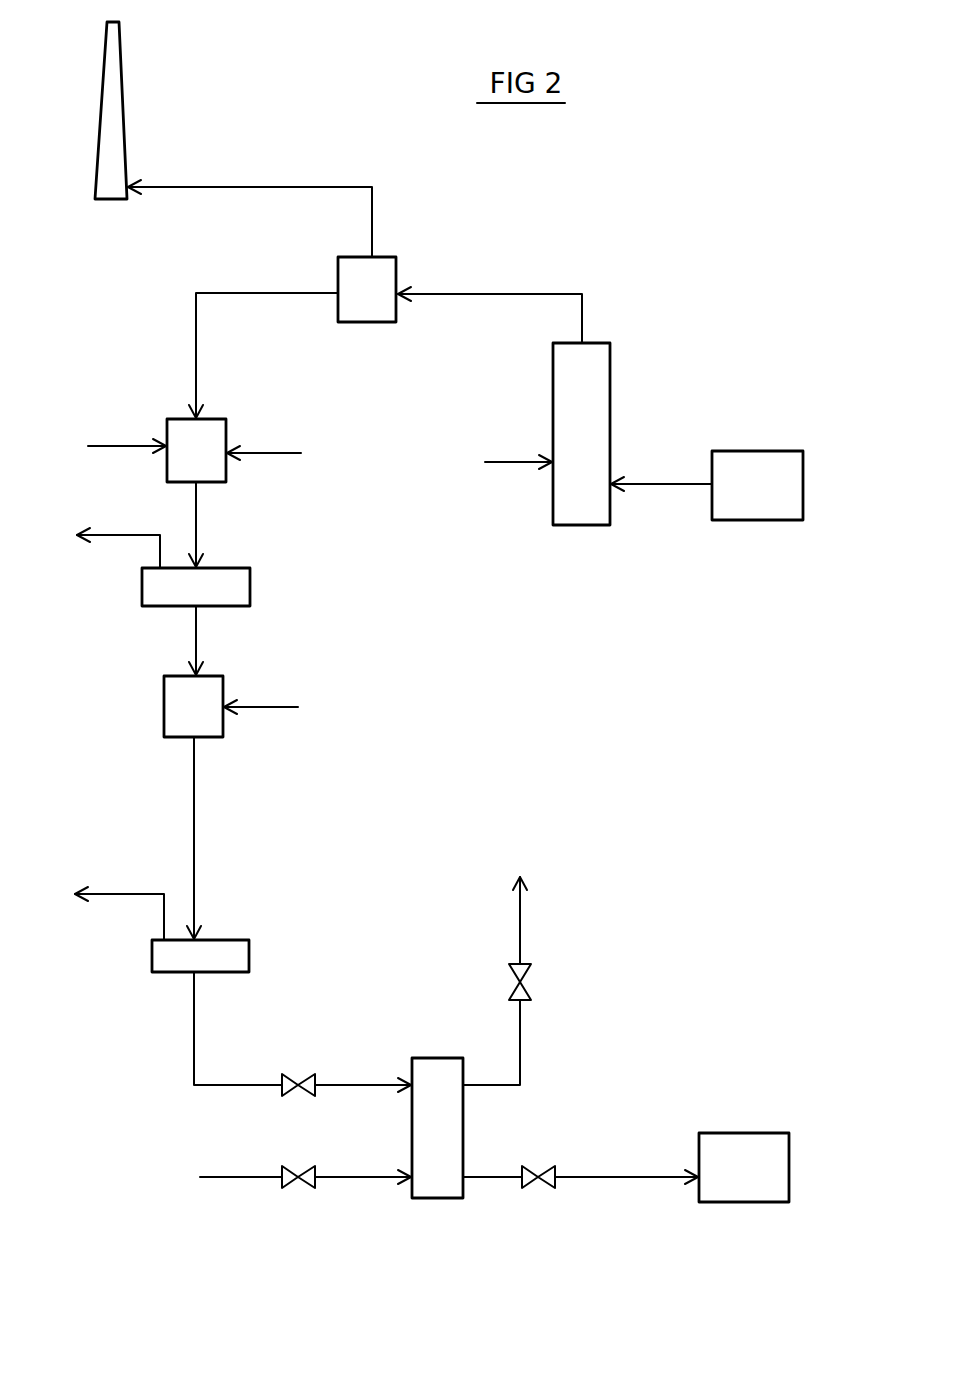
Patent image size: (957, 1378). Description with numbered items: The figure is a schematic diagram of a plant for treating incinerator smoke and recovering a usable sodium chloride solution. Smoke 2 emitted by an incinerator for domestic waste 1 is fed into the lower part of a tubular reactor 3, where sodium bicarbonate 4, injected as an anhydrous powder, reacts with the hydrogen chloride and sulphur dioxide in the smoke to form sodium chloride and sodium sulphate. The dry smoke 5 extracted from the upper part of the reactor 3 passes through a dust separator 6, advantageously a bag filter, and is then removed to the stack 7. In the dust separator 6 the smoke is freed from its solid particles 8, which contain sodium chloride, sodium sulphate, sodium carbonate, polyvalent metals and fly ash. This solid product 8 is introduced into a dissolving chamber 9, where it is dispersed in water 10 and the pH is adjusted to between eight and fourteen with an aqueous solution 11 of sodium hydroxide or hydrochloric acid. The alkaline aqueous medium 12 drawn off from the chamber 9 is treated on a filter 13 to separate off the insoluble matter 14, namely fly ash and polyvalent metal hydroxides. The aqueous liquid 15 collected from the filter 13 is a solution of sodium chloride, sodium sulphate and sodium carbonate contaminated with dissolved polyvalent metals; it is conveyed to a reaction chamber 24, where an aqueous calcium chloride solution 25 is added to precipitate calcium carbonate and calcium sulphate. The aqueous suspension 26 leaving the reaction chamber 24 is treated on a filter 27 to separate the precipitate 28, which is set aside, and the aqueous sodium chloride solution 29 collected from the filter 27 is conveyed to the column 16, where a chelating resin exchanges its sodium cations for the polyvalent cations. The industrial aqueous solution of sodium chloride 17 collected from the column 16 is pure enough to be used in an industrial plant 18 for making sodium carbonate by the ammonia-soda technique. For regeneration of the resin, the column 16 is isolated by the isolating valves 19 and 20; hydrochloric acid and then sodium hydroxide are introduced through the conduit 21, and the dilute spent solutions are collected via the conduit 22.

The incinerator for domestic waste 1 is at (768, 468).
The smoke 2 is at (661, 455).
The tubular reactor 3 is at (610, 372).
The sodium bicarbonate 4 is at (499, 462).
The smoke 5 is at (484, 294).
The dust separator 6 is at (370, 305).
The stack 7 is at (121, 117).
The solid particles 8 is at (196, 355).
The dissolving chamber 9 is at (185, 468).
The water 10 is at (278, 429).
The aqueous solution of sodium hydroxide or hydrochloric acid 11 is at (115, 446).
The alkaline aqueous medium 12 is at (196, 515).
The filter 13 is at (250, 587).
The insoluble matter 14 is at (107, 535).
The aqueous liquid 15 is at (196, 634).
The column 16 is at (437, 1198).
The industrial aqueous solution of sodium chloride 17 is at (641, 1177).
The industrial plant 18 is at (765, 1168).
The isolating valve 19 is at (298, 1075).
The isolating valve 20 is at (538, 1186).
The conduit 21 is at (240, 1177).
The conduit 22 is at (533, 981).
The reaction chamber 24 is at (176, 723).
The aqueous calcium chloride solution 25 is at (276, 686).
The aqueous suspension 26 is at (194, 771).
The filter 27 is at (248, 929).
The calcium carbonate and sulphate precipitate 28 is at (130, 894).
The aqueous sodium chloride solution 29 is at (186, 1028).